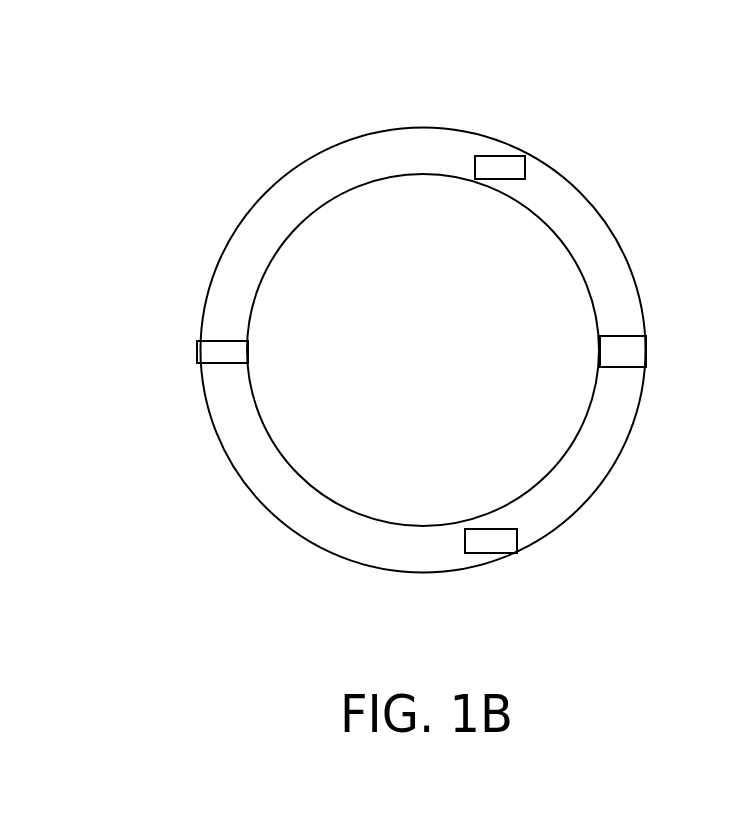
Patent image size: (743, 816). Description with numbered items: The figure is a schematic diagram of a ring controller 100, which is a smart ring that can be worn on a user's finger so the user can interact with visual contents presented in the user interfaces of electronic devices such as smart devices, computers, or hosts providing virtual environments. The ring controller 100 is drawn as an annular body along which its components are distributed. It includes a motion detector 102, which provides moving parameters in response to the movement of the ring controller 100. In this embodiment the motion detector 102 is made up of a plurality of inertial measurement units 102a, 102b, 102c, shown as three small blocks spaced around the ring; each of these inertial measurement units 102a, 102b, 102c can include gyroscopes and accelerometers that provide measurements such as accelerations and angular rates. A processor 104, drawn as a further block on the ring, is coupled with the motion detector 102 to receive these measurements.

The ring controller 100 is at (600, 212).
The motion detector 102 is at (143, 63).
The inertial measurement unit 102a is at (507, 166).
The inertial measurement unit 102b is at (215, 352).
The inertial measurement unit 102c is at (496, 547).
The processor 104 is at (637, 350).